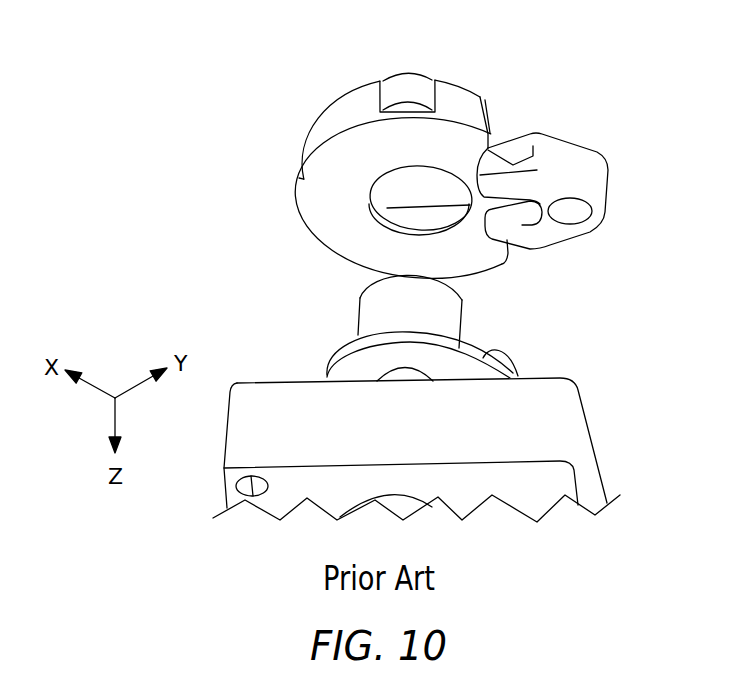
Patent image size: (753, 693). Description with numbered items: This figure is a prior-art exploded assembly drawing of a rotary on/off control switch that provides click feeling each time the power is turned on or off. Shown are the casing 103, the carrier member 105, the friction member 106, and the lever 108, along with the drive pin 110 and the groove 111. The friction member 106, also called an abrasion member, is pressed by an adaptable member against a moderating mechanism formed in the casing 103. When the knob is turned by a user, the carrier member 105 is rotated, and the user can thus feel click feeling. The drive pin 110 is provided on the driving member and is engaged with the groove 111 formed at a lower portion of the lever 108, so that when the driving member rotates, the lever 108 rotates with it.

The casing 103 is at (592, 447).
The carrier member 105 is at (481, 97).
The friction member 106 is at (420, 87).
The lever 108 is at (610, 187).
The drive pin 110 is at (510, 350).
The groove 111 is at (517, 220).